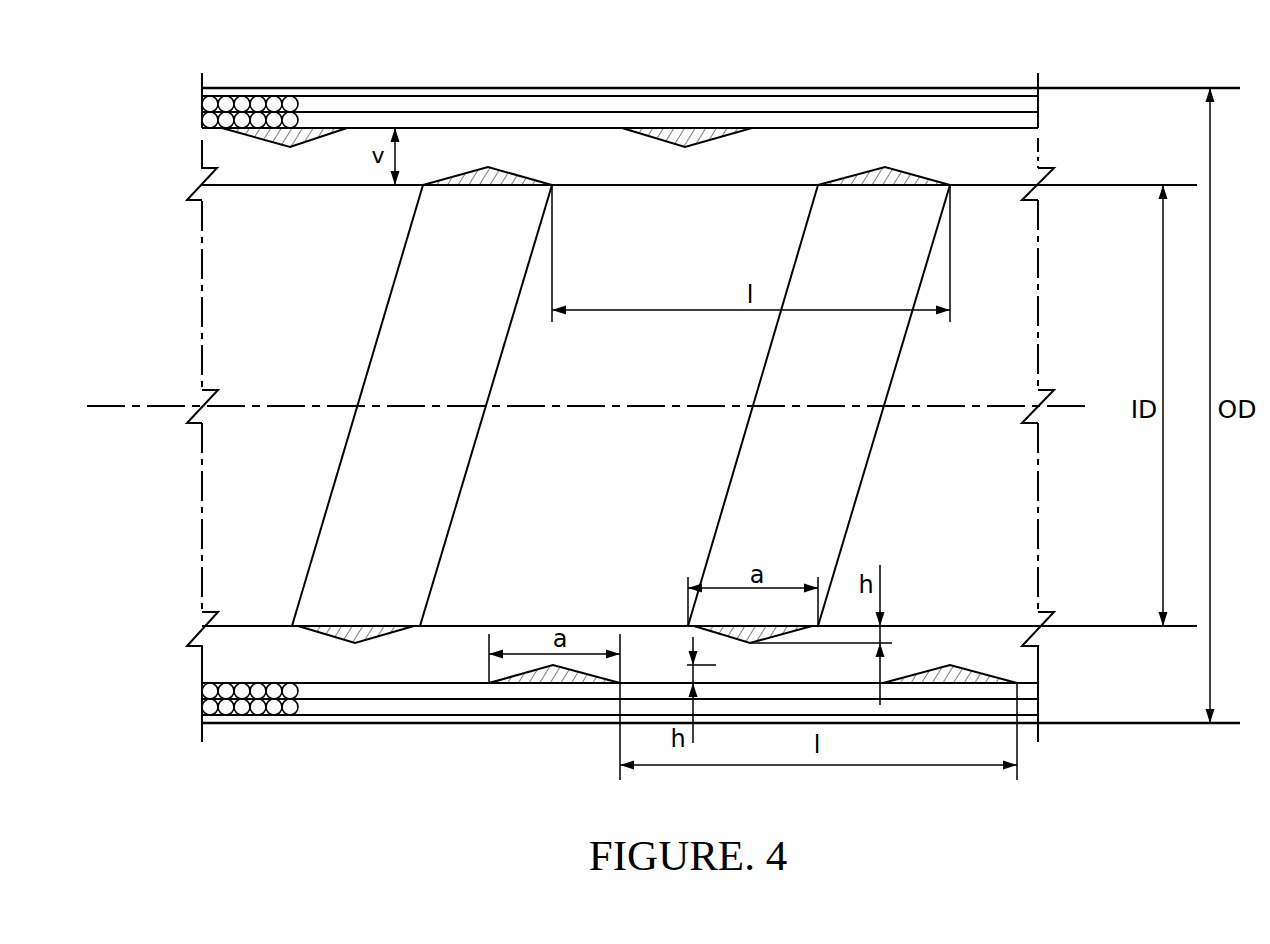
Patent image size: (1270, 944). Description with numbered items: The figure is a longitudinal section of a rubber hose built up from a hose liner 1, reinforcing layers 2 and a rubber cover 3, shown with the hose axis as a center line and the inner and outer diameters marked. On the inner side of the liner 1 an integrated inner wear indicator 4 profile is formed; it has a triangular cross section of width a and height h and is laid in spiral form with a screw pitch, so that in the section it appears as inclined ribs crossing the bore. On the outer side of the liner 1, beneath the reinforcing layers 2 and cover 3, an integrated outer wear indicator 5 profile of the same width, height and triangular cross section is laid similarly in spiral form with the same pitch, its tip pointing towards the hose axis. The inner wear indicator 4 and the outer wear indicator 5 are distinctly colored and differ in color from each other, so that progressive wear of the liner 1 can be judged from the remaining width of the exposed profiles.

The hose liner 1 is at (455, 143).
The reinforcing layer 2 is at (262, 94).
The cover 3 is at (524, 92).
The distinctly colored wear indicator 4 is at (861, 174).
The distinctly colored outer wear indicator 5 is at (679, 136).